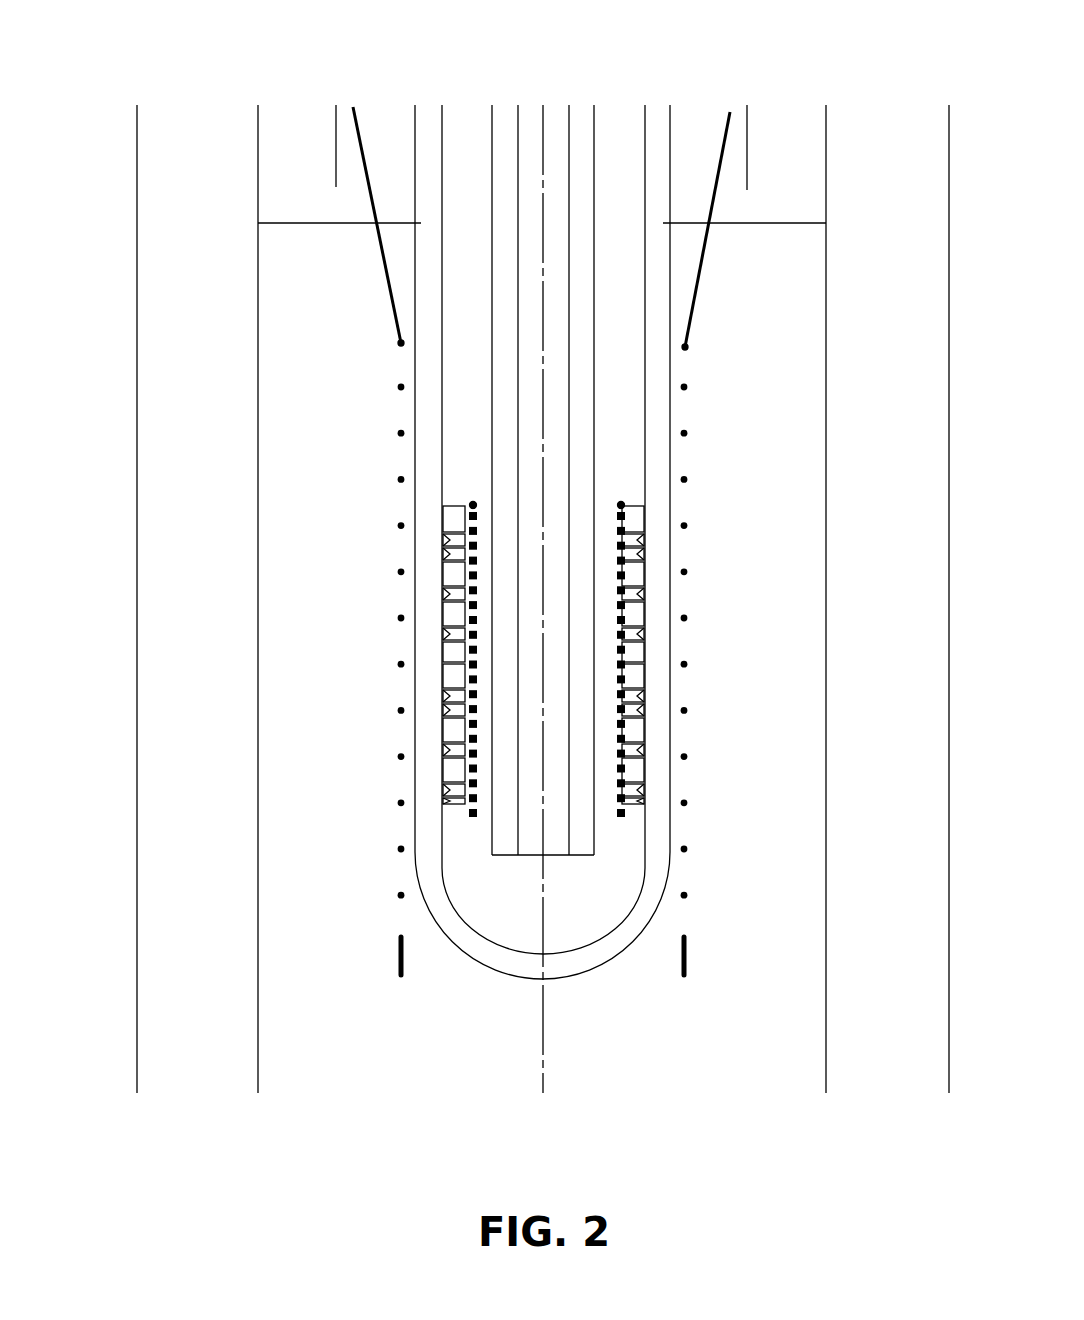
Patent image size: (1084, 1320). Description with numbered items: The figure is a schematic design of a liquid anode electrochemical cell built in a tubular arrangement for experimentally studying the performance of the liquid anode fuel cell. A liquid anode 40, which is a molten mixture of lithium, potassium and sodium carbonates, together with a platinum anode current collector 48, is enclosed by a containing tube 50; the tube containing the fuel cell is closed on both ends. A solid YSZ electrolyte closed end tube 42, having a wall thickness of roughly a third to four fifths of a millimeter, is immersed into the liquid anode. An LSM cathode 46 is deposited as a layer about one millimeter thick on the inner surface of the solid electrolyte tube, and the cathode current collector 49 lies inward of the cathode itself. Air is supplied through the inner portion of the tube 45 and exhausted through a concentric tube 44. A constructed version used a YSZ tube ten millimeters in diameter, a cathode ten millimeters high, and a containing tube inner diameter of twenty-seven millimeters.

The liquid anode 40 is at (317, 392).
The solid YSZ electrolyte closed end tube 42 is at (429, 103).
The concentric tube 44 is at (553, 103).
The inner portion of the tube 45 is at (623, 103).
The LSM cathode 46 is at (452, 806).
The platinum anode current collector 48 is at (400, 978).
The cathode current collector 49 is at (478, 755).
The containing tube 50 is at (152, 588).